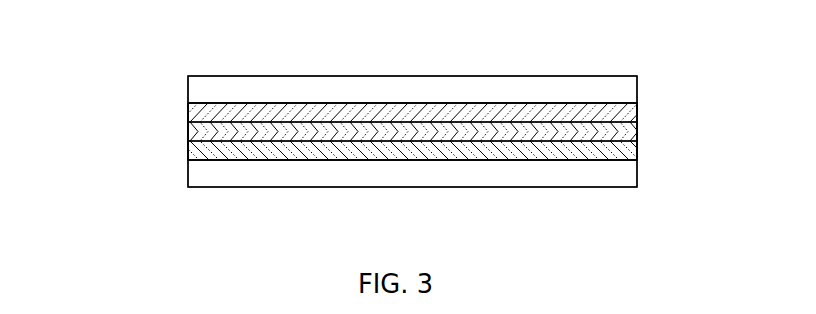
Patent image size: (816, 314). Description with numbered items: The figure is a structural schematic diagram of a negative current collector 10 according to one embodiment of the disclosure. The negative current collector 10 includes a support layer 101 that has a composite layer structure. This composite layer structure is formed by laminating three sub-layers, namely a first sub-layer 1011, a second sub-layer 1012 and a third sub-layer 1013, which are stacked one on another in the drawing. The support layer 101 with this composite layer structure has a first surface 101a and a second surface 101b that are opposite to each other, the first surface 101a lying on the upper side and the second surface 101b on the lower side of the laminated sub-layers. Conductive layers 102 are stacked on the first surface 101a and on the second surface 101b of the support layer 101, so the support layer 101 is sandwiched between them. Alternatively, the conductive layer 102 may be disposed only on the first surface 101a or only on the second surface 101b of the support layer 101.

The negative current collector 10 is at (430, 26).
The support layer 101 is at (67, 43).
The first sub-layer 1011 is at (198, 113).
The second sub-layer 1012 is at (198, 134).
The third sub-layer 1013 is at (196, 153).
The first surface 101a is at (270, 106).
The second surface 101b is at (275, 159).
The conductive layer 102 is at (615, 175).